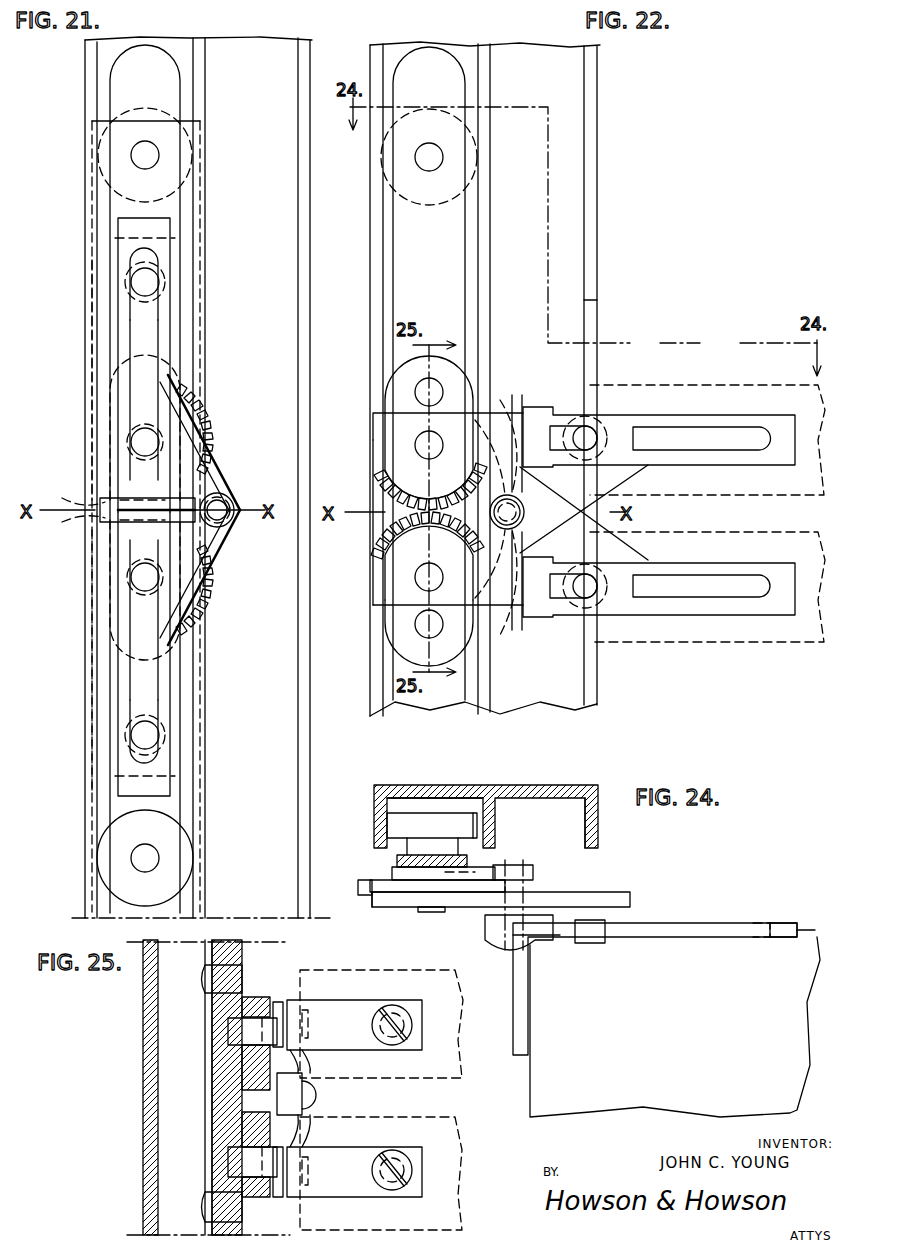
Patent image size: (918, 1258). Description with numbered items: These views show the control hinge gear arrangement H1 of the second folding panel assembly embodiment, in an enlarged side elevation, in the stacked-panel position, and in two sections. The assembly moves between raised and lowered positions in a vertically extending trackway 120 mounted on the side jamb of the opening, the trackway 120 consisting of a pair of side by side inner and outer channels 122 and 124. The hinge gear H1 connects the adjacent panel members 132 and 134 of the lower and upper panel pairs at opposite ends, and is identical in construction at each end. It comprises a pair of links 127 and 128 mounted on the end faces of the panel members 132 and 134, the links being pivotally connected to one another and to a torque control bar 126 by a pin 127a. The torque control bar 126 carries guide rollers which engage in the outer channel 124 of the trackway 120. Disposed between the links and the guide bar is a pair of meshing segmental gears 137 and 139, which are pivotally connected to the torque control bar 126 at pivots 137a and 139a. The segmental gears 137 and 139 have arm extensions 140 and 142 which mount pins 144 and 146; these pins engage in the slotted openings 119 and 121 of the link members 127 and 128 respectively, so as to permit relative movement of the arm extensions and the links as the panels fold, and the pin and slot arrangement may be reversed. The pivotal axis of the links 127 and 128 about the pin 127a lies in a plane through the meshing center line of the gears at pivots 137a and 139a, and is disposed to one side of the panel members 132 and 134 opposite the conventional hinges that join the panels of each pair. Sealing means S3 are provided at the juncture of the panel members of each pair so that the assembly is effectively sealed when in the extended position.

In FIG. 21, the trackway 120 is at (325, 26).
In FIG. 22, the trackway 120 is at (597, 140).
In FIG. 24, the trackway 120 is at (592, 762).
In FIG. 25, the trackway 120 is at (143, 1060).
In FIG. 22, the inner channel 122 is at (572, 222).
In FIG. 24, the inner channel 122 is at (598, 828).
In FIG. 21, the outer channel 124 is at (100, 78).
In FIG. 22, the outer channel 124 is at (385, 318).
In FIG. 24, the outer channel 124 is at (430, 800).
In FIG. 25, the outer channel 124 is at (160, 1015).
In FIG. 21, the torque control bar 126 is at (118, 208).
In FIG. 22, the torque control bar 126 is at (458, 270).
In FIG. 24, the torque control bar 126 is at (468, 862).
In FIG. 25, the torque control bar 126 is at (215, 1098).
In FIG. 21, the arm extension 140 is at (118, 330).
In FIG. 22, the arm extension 140 is at (492, 410).
In FIG. 24, the arm extension 140 is at (615, 895).
In FIG. 25, the arm extension 140 is at (278, 1002).
In FIG. 21, the arm extension 142 is at (118, 660).
In FIG. 22, the arm extension 142 is at (518, 620).
In FIG. 25, the arm extension 142 is at (265, 1200).
In FIG. 21, the pin 144 is at (152, 284).
In FIG. 22, the pin 144 is at (592, 436).
In FIG. 24, the pin 144 is at (598, 944).
In FIG. 25, the pin 144 is at (300, 1038).
In FIG. 21, the pin 146 is at (140, 736).
In FIG. 22, the pin 146 is at (598, 586).
In FIG. 25, the pin 146 is at (300, 1185).
In FIG. 21, the slotted opening 121 is at (160, 320).
In FIG. 22, the slotted opening 121 is at (740, 452).
In FIG. 24, the slotted opening 121 is at (756, 922).
In FIG. 21, the slotted opening 119 is at (158, 680).
In FIG. 22, the slotted opening 119 is at (730, 578).
In FIG. 21, the panel member 134 is at (85, 388).
In FIG. 22, the panel member 134 is at (714, 364).
In FIG. 24, the panel member 134 is at (806, 922).
In FIG. 25, the panel member 134 is at (390, 966).
In FIG. 21, the panel member 132 is at (90, 720).
In FIG. 22, the panel member 132 is at (782, 645).
In FIG. 25, the panel member 132 is at (459, 1106).
In FIG. 21, the link 128 is at (172, 372).
In FIG. 22, the link 128 is at (728, 418).
In FIG. 24, the link 128 is at (690, 922).
In FIG. 25, the link 128 is at (308, 1064).
In FIG. 21, the link 127 is at (165, 700).
In FIG. 22, the link 127 is at (752, 605).
In FIG. 25, the link 127 is at (298, 1138).
In FIG. 21, the pin 127a is at (232, 505).
In FIG. 22, the pin 127a is at (516, 497).
In FIG. 24, the pin 127a is at (530, 890).
In FIG. 25, the pin 127a is at (318, 1095).
In FIG. 21, the segmental gear 137 is at (214, 420).
In FIG. 22, the segmental gear 137 is at (372, 428).
In FIG. 24, the segmental gear 137 is at (370, 896).
In FIG. 25, the segmental gear 137 is at (250, 998).
In FIG. 21, the pivot 137a is at (140, 444).
In FIG. 22, the pivot 137a is at (438, 458).
In FIG. 24, the pivot 137a is at (435, 913).
In FIG. 25, the pivot 137a is at (235, 1033).
In FIG. 21, the segmental gear 139 is at (212, 610).
In FIG. 22, the segmental gear 139 is at (370, 572).
In FIG. 25, the segmental gear 139 is at (245, 1130).
In FIG. 21, the pivot 139a is at (140, 578).
In FIG. 22, the pivot 139a is at (432, 568).
In FIG. 25, the pivot 139a is at (250, 1165).
In FIG. 21, the hinge gear arrangement H1 is at (222, 486).
In FIG. 22, the hinge gear arrangement H1 is at (385, 500).
In FIG. 24, the hinge gear arrangement H1 is at (358, 882).
In FIG. 21, the sealing means S3 is at (100, 505).
In FIG. 22, the sealing means S3 is at (515, 400).